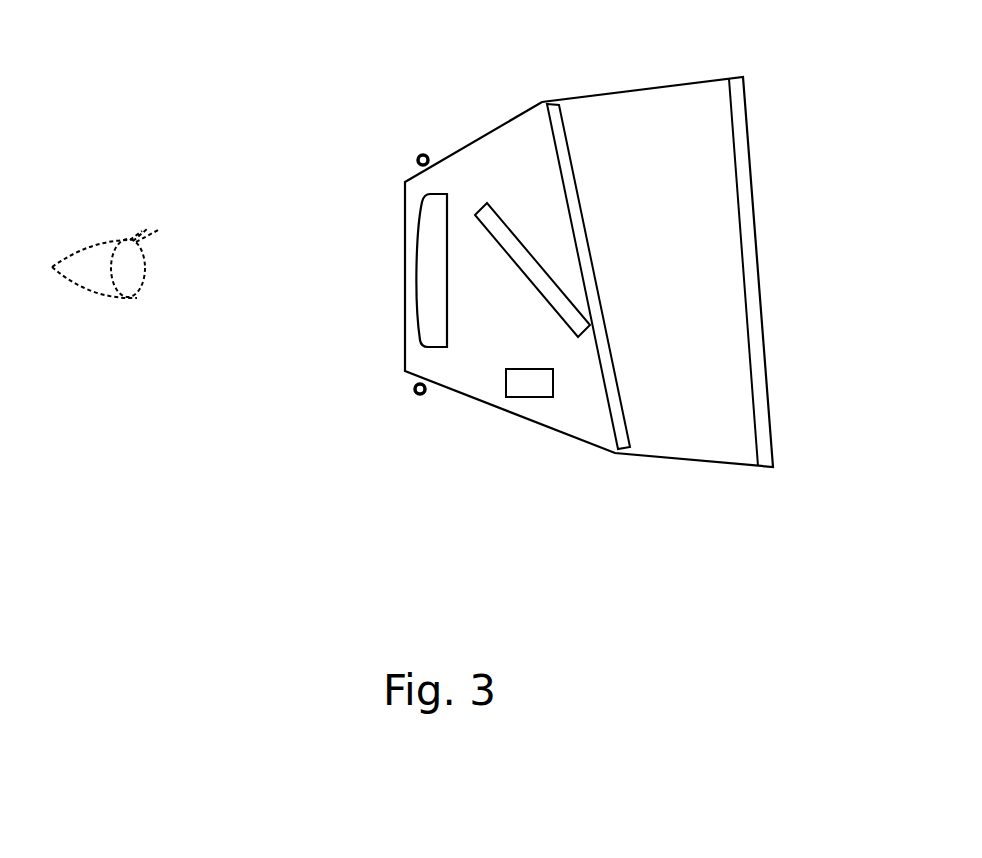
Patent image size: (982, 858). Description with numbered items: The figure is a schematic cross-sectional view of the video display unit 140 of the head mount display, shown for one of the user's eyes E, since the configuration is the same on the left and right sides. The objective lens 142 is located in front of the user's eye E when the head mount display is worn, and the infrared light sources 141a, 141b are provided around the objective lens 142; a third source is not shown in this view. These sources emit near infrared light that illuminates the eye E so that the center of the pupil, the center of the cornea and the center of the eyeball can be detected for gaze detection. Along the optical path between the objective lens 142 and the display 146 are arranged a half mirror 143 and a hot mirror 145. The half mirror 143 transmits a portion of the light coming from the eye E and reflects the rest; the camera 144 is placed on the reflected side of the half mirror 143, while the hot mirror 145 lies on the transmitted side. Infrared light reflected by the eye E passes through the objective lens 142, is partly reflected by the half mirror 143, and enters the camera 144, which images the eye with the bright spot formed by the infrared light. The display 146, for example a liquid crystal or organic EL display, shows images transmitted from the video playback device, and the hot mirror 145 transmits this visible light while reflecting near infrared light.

The video display unit 140 is at (655, 88).
The infrared light source 141a is at (423, 152).
The infrared light source 141b is at (412, 389).
The objective lens 142 is at (418, 232).
The half mirror 143 is at (502, 205).
The camera 144 is at (545, 398).
The hot mirror 145 is at (568, 128).
The display 146 is at (748, 137).
The eye E is at (85, 247).